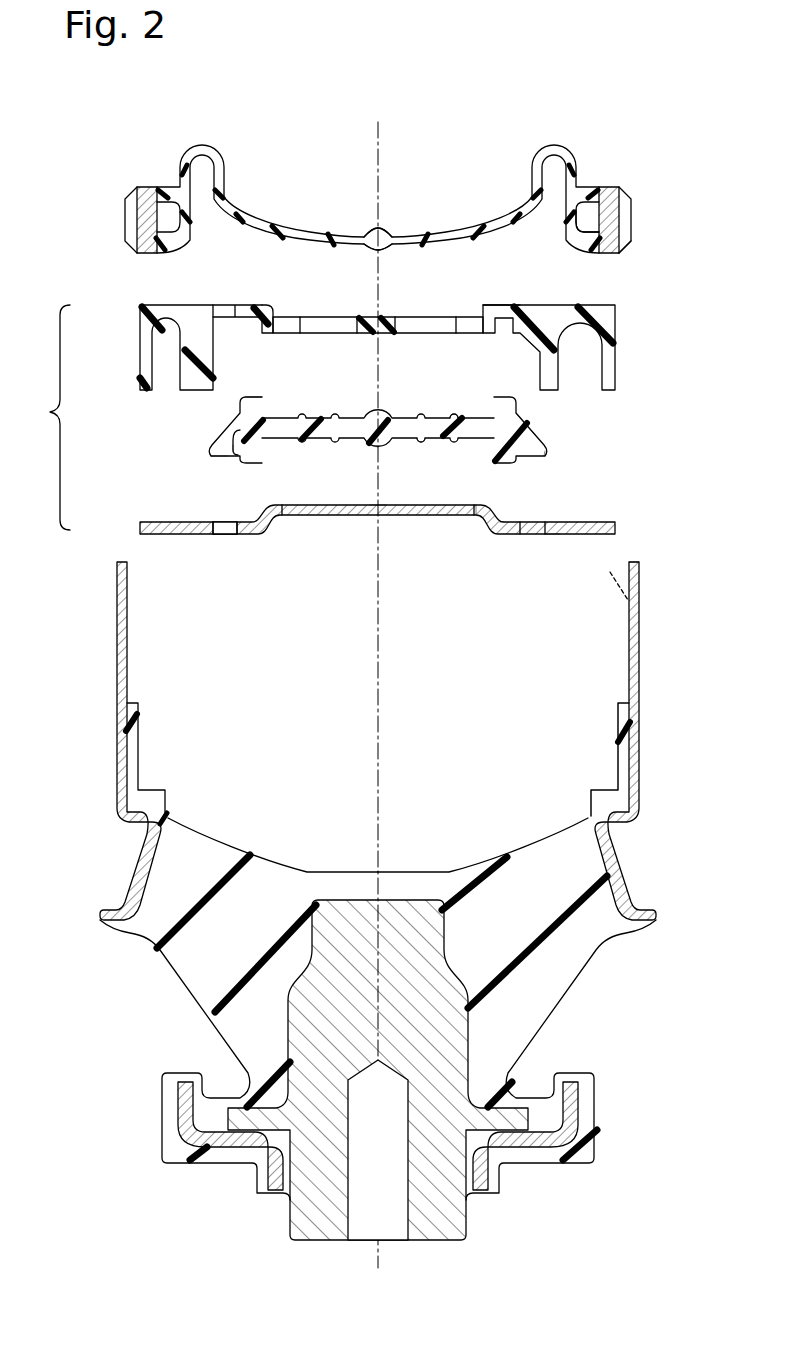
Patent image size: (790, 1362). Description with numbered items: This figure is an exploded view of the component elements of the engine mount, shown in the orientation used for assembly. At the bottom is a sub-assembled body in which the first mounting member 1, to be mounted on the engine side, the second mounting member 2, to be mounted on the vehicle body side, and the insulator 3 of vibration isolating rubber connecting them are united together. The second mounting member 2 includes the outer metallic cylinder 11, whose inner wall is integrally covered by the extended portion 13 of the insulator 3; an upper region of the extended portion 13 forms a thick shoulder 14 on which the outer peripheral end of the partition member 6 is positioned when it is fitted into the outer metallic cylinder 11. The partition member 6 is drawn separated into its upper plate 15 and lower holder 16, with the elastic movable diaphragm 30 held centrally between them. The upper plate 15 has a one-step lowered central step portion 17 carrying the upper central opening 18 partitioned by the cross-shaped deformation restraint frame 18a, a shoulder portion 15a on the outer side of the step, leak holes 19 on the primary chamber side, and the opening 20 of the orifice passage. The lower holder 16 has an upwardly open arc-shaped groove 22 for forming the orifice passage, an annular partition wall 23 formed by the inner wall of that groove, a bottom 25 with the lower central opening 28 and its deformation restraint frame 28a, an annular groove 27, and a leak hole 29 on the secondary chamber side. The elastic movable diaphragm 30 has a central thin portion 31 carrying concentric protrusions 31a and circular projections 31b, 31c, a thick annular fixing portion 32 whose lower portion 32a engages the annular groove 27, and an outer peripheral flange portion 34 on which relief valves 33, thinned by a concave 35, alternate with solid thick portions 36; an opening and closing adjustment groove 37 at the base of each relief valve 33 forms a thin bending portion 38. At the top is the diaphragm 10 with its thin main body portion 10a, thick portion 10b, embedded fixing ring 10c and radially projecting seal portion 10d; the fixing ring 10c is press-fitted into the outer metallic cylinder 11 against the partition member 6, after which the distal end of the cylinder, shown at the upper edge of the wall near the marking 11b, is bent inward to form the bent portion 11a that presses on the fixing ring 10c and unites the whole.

The first mounting member 1 is at (462, 1226).
The second mounting member 2 is at (646, 905).
The insulator 3 is at (540, 996).
The partition member 6 is at (44, 417).
The diaphragm 10 is at (328, 226).
The thin main body portion 10a is at (396, 224).
The thick portion 10b is at (590, 236).
The fixing ring 10c is at (625, 242).
The seal portion 10d is at (621, 212).
The outer metallic cylinder 11 is at (406, 741).
The bent portion 11a is at (646, 575).
The caulked portion 11b is at (608, 575).
The extended portion 13 is at (618, 750).
The shoulder 14 is at (600, 790).
The upper plate 15 is at (403, 527).
The shoulder portion 15a is at (510, 511).
The lower holder 16 is at (411, 344).
The central step portion 17 is at (478, 518).
The upper central opening 18 is at (322, 516).
The deformation restraint frame 18a is at (380, 516).
The leak hole 19 is at (217, 535).
The opening of the orifice passage 20 is at (560, 536).
The arc-shaped groove 22 is at (596, 358).
The annular partition wall 23 is at (200, 370).
The bottom 25 is at (492, 309).
The annular groove 27 is at (262, 322).
The lower central opening 28 is at (318, 331).
The deformation restraint frame 28a is at (390, 320).
The leak hole 29 is at (226, 312).
The elastic movable diaphragm 30 is at (436, 435).
The central thin portion 31 is at (406, 416).
The protrusion 31a is at (370, 448).
The circular projection 31b is at (422, 442).
The circular projection 31c is at (440, 417).
The fixing portion 32 is at (258, 463).
The lower portion 32a is at (256, 402).
The relief valve 33 is at (215, 446).
The outer peripheral flange portion 34 is at (550, 459).
The concave 35 is at (228, 458).
The solid thick portion 36 is at (516, 440).
The opening and closing adjustment groove 37 is at (238, 456).
The thin bending portion 38 is at (236, 434).